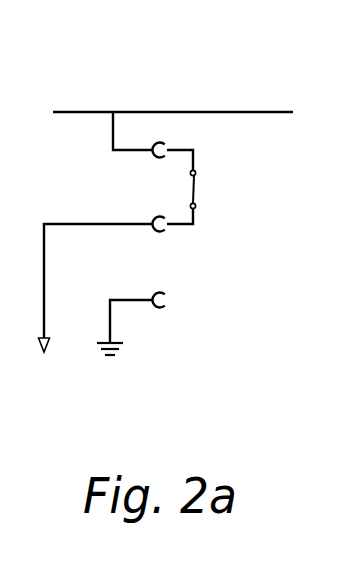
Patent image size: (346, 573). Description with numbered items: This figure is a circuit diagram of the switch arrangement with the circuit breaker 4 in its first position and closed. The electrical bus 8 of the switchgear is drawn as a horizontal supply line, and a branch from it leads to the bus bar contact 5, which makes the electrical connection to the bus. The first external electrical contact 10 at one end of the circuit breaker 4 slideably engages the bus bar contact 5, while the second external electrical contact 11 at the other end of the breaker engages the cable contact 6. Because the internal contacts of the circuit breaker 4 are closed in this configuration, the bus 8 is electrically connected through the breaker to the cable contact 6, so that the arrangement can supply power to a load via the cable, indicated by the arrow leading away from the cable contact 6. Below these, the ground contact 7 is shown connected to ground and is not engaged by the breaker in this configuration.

The circuit breaker 4 is at (196, 206).
The bus bar contact 5 is at (156, 145).
The cable contact 6 is at (163, 232).
The ground contact 7 is at (163, 308).
The electrical bus 8 is at (82, 111).
The first external electrical contact 10 is at (196, 149).
The second external electrical contact 11 is at (195, 228).